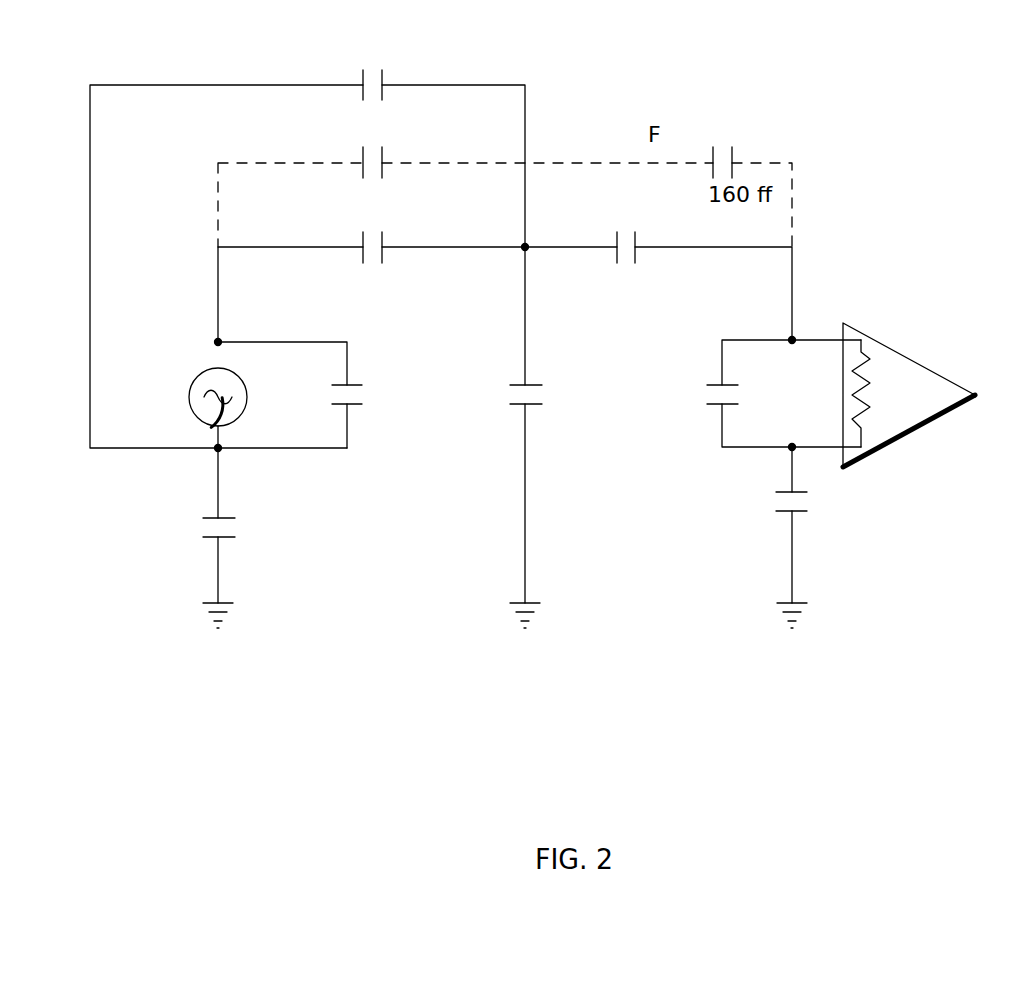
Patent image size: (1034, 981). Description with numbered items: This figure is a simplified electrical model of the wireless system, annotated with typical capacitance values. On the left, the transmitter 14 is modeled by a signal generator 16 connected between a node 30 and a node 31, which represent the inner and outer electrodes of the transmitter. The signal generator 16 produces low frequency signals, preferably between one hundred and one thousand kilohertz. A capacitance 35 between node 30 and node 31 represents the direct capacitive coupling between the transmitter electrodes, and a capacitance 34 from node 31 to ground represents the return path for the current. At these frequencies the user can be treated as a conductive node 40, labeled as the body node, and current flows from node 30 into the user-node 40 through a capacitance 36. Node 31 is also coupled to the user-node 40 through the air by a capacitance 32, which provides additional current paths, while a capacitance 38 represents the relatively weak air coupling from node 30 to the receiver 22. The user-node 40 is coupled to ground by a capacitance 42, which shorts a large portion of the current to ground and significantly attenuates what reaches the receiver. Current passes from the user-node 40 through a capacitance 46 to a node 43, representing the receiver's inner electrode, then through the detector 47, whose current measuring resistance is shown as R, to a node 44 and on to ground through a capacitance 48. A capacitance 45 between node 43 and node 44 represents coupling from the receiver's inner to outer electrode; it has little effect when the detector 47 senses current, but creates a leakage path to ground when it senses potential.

The transmitter 14 is at (63, 533).
The signal generator 16 is at (198, 382).
The receiver 22 is at (930, 333).
The node 30 is at (221, 341).
The node 31 is at (214, 451).
The capacitance 32 is at (384, 74).
The capacitance 34 is at (210, 538).
The capacitance 35 is at (358, 404).
The capacitance 36 is at (384, 262).
The capacitance 38 is at (384, 156).
The conductive node 40 is at (527, 250).
The capacitance 42 is at (538, 404).
The node 43 is at (792, 343).
The node 44 is at (792, 445).
The capacitance 45 is at (708, 404).
The capacitance 46 is at (636, 236).
The detector 47 is at (920, 430).
The capacitance 48 is at (800, 512).